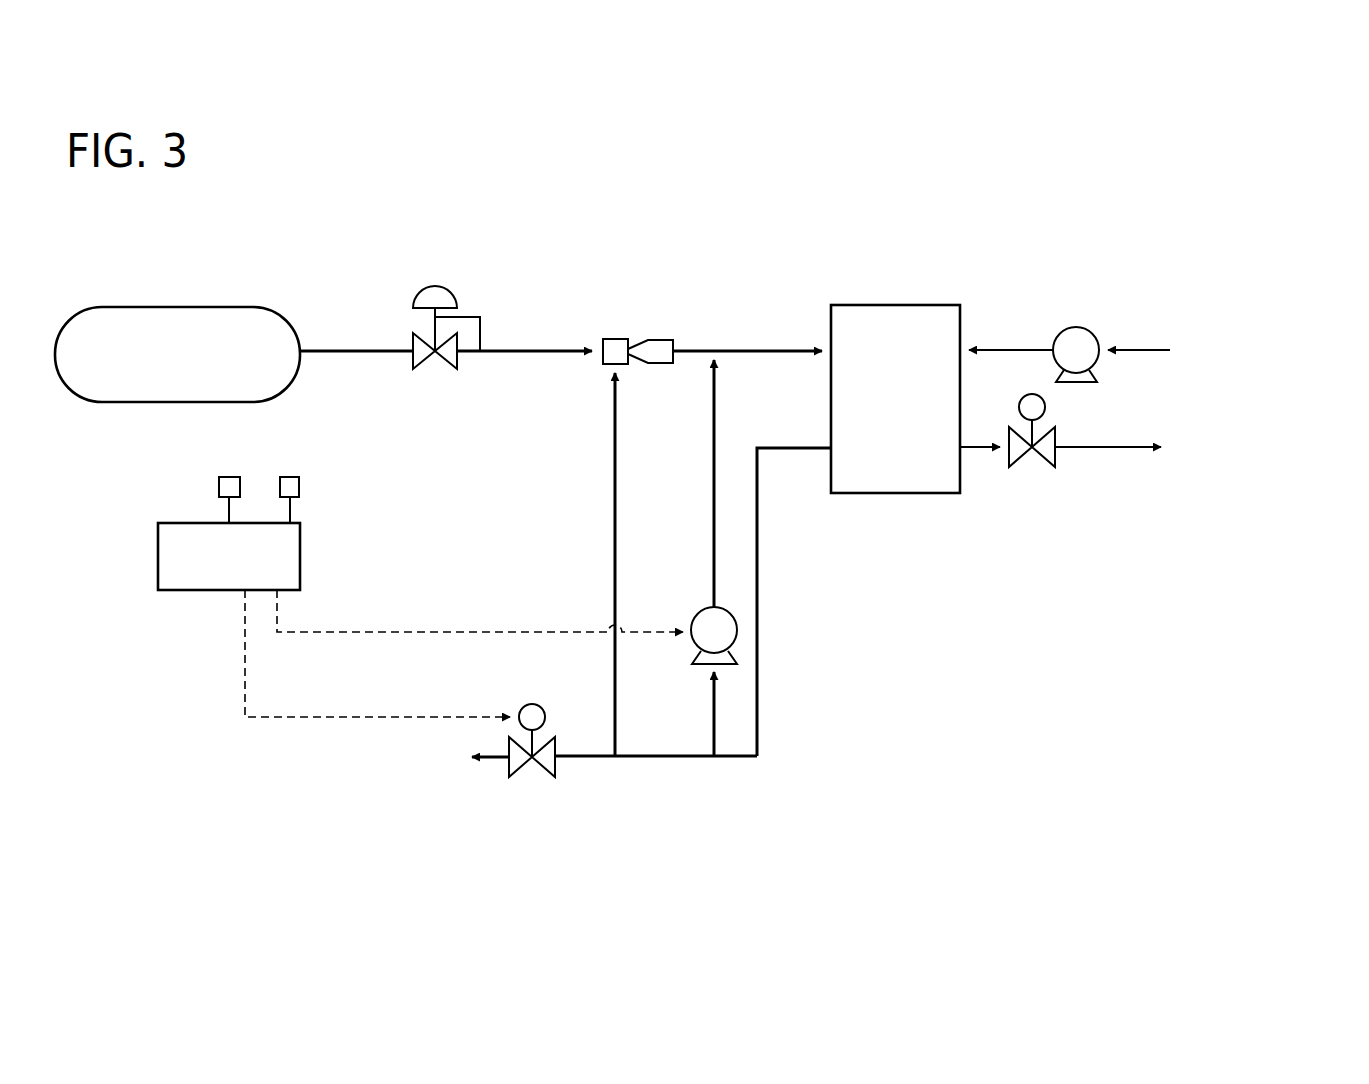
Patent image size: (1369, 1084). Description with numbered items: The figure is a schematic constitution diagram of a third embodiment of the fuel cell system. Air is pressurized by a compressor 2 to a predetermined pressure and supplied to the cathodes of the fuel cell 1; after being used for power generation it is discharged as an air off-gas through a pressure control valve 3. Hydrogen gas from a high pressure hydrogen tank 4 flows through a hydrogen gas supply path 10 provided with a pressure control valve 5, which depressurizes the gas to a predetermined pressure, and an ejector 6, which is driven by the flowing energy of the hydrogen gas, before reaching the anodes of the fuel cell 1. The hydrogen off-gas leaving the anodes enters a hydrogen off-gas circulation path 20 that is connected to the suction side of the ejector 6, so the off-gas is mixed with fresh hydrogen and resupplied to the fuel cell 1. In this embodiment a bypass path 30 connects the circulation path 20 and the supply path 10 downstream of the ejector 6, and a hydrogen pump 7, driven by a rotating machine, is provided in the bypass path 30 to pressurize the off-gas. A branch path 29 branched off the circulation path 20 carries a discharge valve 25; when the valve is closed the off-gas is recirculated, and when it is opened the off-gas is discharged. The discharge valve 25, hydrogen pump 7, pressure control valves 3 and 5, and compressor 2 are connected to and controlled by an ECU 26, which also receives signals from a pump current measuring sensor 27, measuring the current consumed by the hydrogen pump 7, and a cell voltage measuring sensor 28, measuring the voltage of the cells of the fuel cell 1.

The fuel cell 1 is at (893, 304).
The compressor 2 is at (1076, 326).
The pressure control valve 3 is at (1030, 468).
The high pressure hydrogen tank 4 is at (178, 306).
The pressure control valve 5 is at (436, 284).
The ejector 6 is at (615, 338).
The hydrogen pump 7 is at (700, 612).
The hydrogen gas supply path 10 is at (540, 350).
The hydrogen off-gas circulation path 20 is at (757, 632).
The discharge valve 25 is at (522, 778).
The ECU 26 is at (158, 553).
The pump current measuring sensor 27 is at (218, 487).
The cell voltage measuring sensor 28 is at (300, 487).
The branch path 29 is at (586, 758).
The bypass path 30 is at (716, 548).